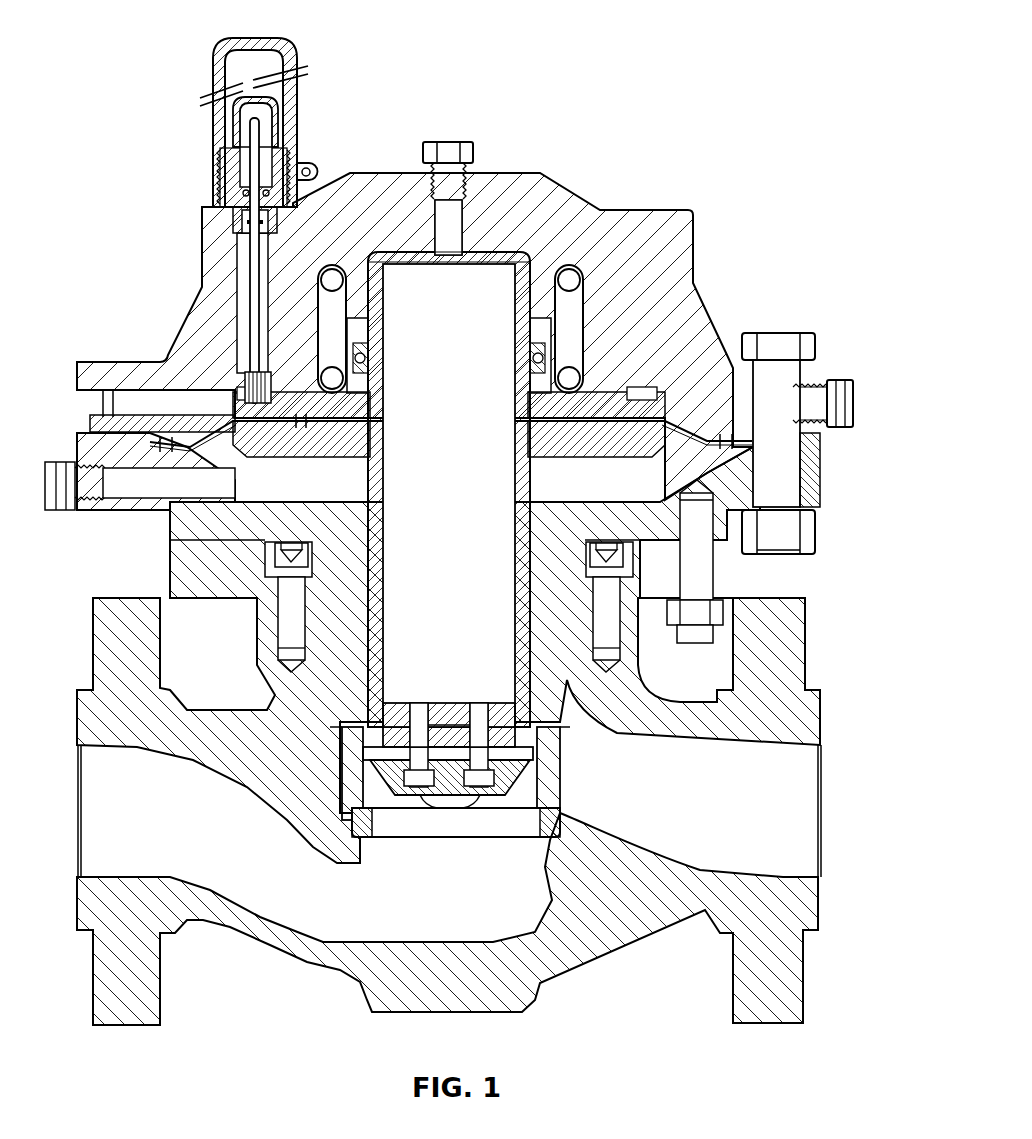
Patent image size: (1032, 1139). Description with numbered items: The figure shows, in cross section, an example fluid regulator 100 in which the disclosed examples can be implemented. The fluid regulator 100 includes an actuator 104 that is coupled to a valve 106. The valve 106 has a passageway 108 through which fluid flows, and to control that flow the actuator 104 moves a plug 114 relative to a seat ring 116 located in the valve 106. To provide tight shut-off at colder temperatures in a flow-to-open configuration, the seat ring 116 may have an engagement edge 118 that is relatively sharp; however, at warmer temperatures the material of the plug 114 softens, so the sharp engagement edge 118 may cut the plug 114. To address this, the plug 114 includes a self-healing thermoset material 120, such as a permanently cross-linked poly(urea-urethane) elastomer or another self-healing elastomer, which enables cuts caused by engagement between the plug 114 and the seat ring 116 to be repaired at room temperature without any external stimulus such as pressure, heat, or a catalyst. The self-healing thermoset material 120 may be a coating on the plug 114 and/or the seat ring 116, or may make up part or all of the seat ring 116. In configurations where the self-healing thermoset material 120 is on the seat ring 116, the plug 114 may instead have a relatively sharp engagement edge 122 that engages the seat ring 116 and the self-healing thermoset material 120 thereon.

The fluid regulator 100 is at (471, 518).
The actuator 104 is at (755, 261).
The valve 106 is at (814, 633).
The passageway 108 is at (337, 910).
The plug 114 is at (502, 703).
The seat ring 116 is at (550, 822).
The engagement edge 118 is at (525, 800).
The self-healing thermoset material 120 is at (345, 835).
The engagement edge 122 is at (382, 727).